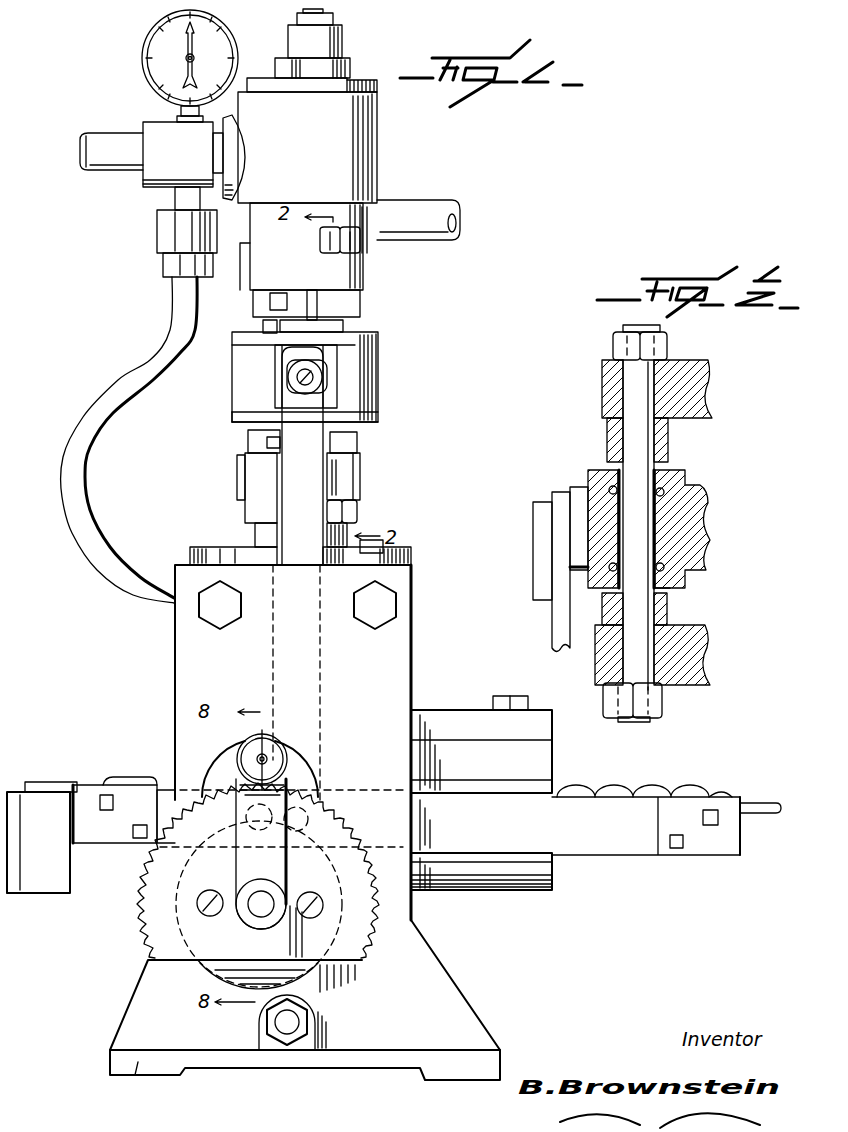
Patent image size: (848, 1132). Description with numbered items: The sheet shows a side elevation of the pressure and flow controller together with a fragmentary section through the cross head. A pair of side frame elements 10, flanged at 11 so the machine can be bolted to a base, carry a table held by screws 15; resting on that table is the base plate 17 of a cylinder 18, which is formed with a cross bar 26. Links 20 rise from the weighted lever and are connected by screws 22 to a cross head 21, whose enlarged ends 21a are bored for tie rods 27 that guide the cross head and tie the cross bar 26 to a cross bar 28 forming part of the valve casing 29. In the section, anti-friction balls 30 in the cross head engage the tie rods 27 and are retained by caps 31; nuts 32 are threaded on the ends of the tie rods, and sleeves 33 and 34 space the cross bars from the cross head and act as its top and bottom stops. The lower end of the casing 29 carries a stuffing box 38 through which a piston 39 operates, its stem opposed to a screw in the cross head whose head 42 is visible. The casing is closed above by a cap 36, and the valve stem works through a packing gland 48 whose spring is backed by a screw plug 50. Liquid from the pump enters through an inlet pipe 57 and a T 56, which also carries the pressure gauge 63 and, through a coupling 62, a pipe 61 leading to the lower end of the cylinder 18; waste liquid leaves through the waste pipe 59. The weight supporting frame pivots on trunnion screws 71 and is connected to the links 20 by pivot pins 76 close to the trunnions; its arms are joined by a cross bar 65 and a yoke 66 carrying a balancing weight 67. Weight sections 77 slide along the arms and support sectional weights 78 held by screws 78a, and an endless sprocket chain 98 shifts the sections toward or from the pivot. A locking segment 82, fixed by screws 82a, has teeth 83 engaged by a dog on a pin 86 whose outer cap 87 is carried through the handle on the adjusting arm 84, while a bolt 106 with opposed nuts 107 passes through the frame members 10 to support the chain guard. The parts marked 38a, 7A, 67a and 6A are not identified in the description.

In FIG. 1, the pressure gauge 63 is at (165, 38).
In FIG. 1, the T 56 is at (155, 128).
In FIG. 1, the inlet pipe 57 is at (82, 148).
In FIG. 1, the coupling 62 is at (170, 268).
In FIG. 1, the pipe 61 is at (106, 406).
In FIG. 1, the valve casing 29 is at (363, 138).
In FIG. 1, the cap 36 is at (265, 78).
In FIG. 1, the packing gland 48 is at (342, 46).
In FIG. 1, the screw plug 50 is at (330, 16).
In FIG. 1, the waste pipe 59 is at (452, 208).
In FIG. 1, the cross bar 28 is at (355, 281).
In FIG. 2, the cross bar 28 is at (695, 392).
In FIG. 1, the nuts 32 is at (320, 243).
In FIG. 2, the nuts 32 is at (613, 341).
In FIG. 1, the sleeve 33 is at (360, 312).
In FIG. 2, the sleeve 33 is at (607, 433).
In FIG. 1, the stuffing box 38 is at (276, 289).
In FIG. 1, the piston or plunger 39 is at (312, 293).
In FIG. 1, the pin member 38a is at (262, 323).
In FIG. 1, the tie rods 27 is at (345, 328).
In FIG. 2, the tie rods 27 is at (625, 655).
In FIG. 1, the head 42 is at (240, 340).
In FIG. 1, the cross head 21 is at (265, 392).
In FIG. 2, the cross head 21 is at (710, 533).
In FIG. 1, the enlarged ends 21a is at (370, 381).
In FIG. 2, the enlarged ends 21a is at (602, 530).
In FIG. 1, the screws 22 is at (290, 378).
In FIG. 2, the screws 22 is at (533, 508).
In FIG. 1, the links 20 is at (295, 470).
In FIG. 2, the links 20 is at (550, 610).
In FIG. 1, the caps 31 is at (232, 415).
In FIG. 2, the caps 31 is at (672, 590).
In FIG. 1, the sleeve 34 is at (252, 442).
In FIG. 2, the sleeve 34 is at (667, 605).
In FIG. 1, the cross bar 26 is at (360, 481).
In FIG. 2, the cross bar 26 is at (700, 652).
In FIG. 1, the cylinder 18 is at (262, 505).
In FIG. 1, the base plate 17 is at (190, 556).
In FIG. 1, the side frame elements 10 is at (430, 968).
In FIG. 1, the flange 11 is at (137, 1072).
In FIG. 1, the screws 15 is at (370, 622).
In FIG. 1, the cap 87 is at (238, 750).
In FIG. 1, the pin 86 is at (270, 758).
In FIG. 1, the pivot pins 76 is at (316, 790).
In FIG. 1, the teeth 83 is at (352, 830).
In FIG. 1, the pivot screw 71 is at (240, 854).
In FIG. 1, the adjusting arm 84 is at (272, 867).
In FIG. 1, the screws 82a is at (210, 916).
In FIG. 1, the locking segment 82 is at (358, 912).
In FIG. 1, the bearing 7A is at (210, 968).
In FIG. 1, the bolt 106 is at (287, 1022).
In FIG. 1, the nuts 107 is at (268, 1031).
In FIG. 1, the balancing weight 67 is at (58, 868).
In FIG. 1, the block face 67a is at (15, 886).
In FIG. 1, the yoke 66 is at (46, 782).
In FIG. 1, the sectional weights 78 is at (441, 722).
In FIG. 1, the screws 78a is at (510, 698).
In FIG. 1, the slide rod 6A is at (612, 848).
In FIG. 1, the cross bar 65 is at (770, 803).
In FIG. 1, the endless sprocket chain 98 is at (596, 793).
In FIG. 1, the weight sections 77 is at (530, 868).
In FIG. 2, the anti-friction balls 30 is at (664, 492).